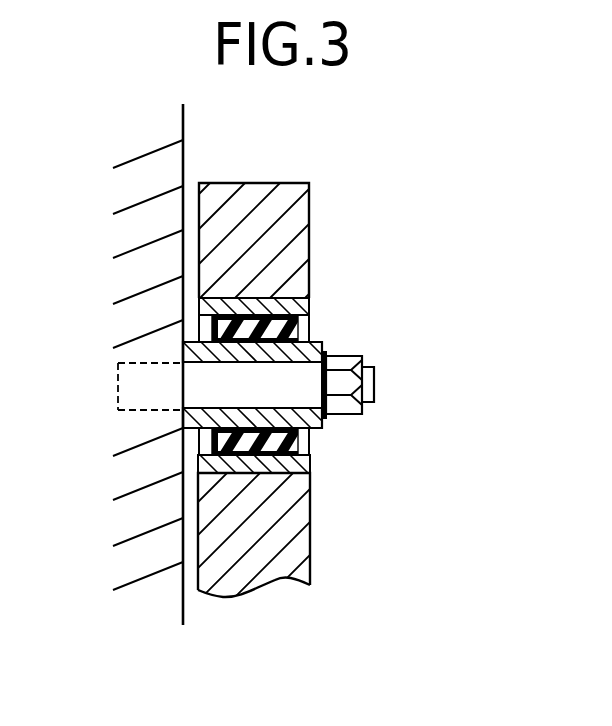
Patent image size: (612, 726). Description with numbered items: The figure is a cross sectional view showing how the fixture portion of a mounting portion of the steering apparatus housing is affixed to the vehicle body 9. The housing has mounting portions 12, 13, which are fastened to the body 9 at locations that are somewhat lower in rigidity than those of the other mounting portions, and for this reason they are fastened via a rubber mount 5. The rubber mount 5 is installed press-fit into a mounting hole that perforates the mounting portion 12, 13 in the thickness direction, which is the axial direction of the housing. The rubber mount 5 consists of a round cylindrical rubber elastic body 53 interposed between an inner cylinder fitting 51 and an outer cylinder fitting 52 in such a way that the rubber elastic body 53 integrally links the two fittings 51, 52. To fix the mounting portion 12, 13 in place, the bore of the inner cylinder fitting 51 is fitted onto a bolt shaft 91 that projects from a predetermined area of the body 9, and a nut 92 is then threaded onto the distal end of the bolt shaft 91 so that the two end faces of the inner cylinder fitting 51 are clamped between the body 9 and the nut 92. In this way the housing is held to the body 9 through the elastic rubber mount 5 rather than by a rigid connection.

The body 9 is at (84, 319).
The mounting portion 12 is at (292, 365).
The mounting portion 13 is at (259, 196).
The outer cylinder fitting 52 is at (312, 305).
The rubber elastic body 53 is at (315, 330).
The inner cylinder fitting 51 is at (325, 346).
The bolt shaft 91 is at (373, 380).
The nut 92 is at (346, 409).
The rubber mount 5 is at (316, 445).